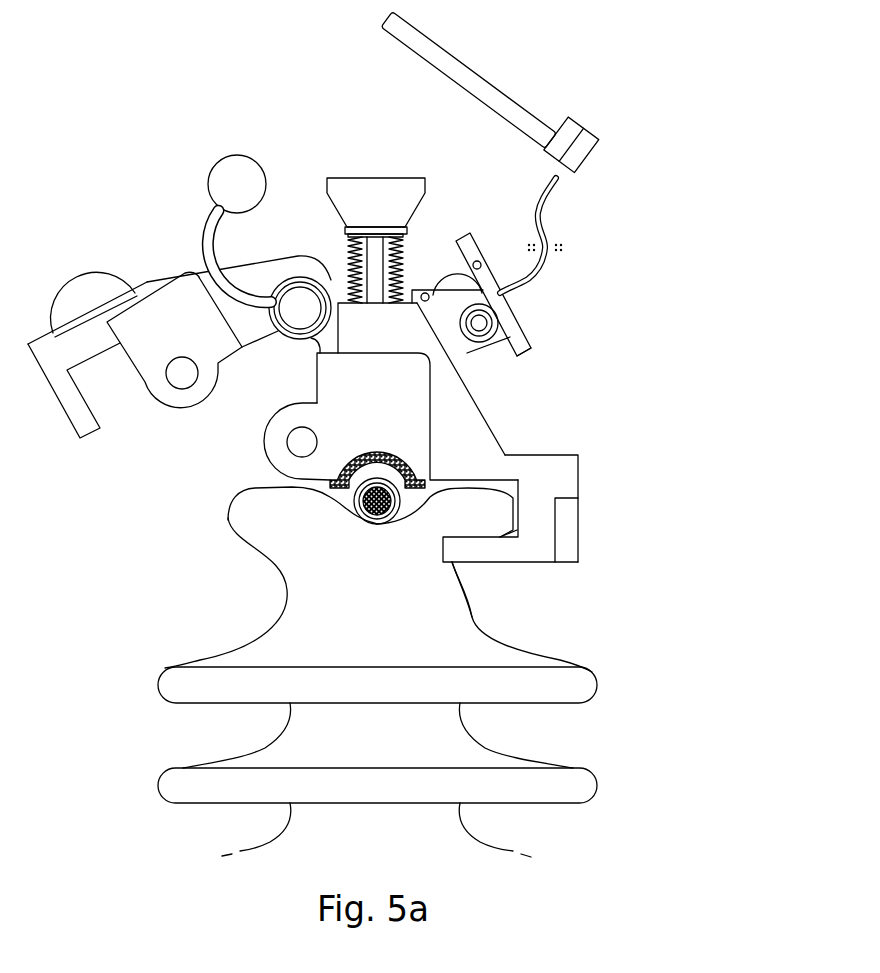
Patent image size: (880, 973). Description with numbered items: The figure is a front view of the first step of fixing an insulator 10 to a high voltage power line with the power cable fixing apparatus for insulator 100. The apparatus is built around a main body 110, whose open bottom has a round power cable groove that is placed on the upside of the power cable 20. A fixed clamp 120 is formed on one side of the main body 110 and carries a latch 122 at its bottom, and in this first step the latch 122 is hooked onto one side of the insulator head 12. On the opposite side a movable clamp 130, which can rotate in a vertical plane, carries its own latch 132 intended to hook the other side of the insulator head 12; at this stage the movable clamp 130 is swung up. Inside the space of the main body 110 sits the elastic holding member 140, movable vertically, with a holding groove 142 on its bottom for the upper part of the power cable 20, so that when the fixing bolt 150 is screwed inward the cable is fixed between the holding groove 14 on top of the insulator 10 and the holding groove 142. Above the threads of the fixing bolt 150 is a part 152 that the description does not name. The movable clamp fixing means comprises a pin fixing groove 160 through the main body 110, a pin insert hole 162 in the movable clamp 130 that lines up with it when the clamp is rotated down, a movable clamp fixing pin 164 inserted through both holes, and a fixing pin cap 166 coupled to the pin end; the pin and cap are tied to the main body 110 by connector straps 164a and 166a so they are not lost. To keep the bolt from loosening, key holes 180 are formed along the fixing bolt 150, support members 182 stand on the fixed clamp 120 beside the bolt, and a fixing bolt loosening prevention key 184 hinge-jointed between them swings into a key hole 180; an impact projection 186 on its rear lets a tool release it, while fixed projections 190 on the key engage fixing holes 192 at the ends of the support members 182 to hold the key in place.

The insulator 10 is at (170, 683).
The insulator head 12 is at (228, 515).
The holding groove 14 is at (320, 494).
The power cable 20 is at (453, 553).
The power cable fixing apparatus for insulator 100 is at (621, 314).
The main body 110 is at (413, 427).
The fixed clamp 120 is at (467, 392).
The latch 122 is at (466, 588).
The movable clamp 130 is at (153, 278).
The latch 132 is at (88, 432).
The elastic holding member 140 is at (500, 463).
The holding groove 142 is at (336, 470).
The fixing bolt 150 is at (400, 260).
The screw head 152 is at (363, 183).
The pin fixing groove 160 is at (293, 428).
The pin insert hole 162 is at (178, 382).
The movable clamp fixing pin 164 is at (463, 70).
The connector strap 164a is at (545, 210).
The fixing pin cap 166 is at (230, 163).
The connector strap 166a is at (213, 222).
The key holes 180 is at (350, 263).
The support members 182 is at (516, 348).
The fixing bolt loosening prevention key 184 is at (463, 243).
The impact projection 186 is at (532, 350).
The fixed projections 190 is at (500, 287).
The fixing holes 192 is at (500, 305).